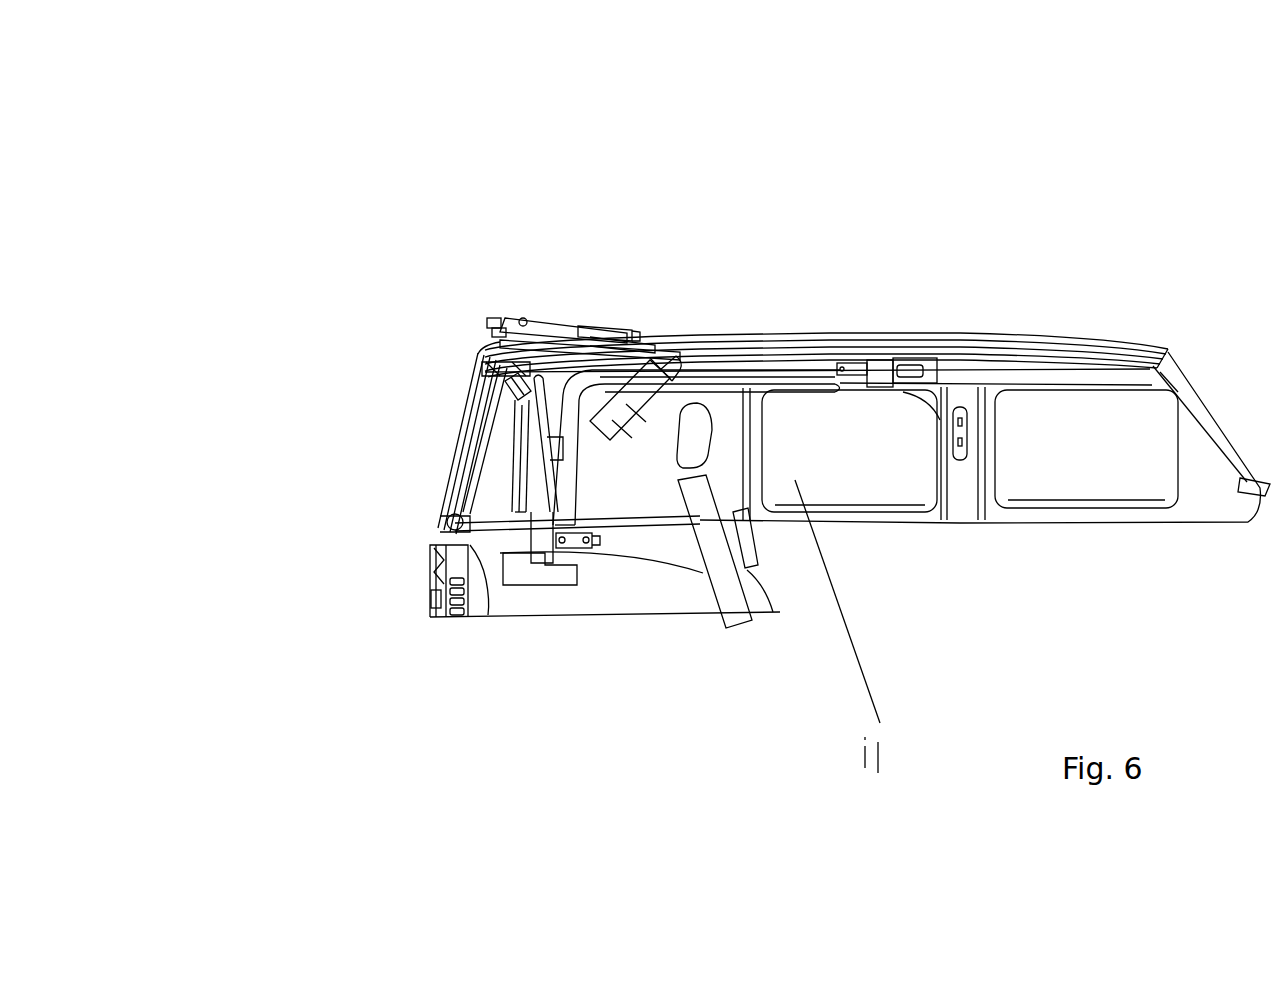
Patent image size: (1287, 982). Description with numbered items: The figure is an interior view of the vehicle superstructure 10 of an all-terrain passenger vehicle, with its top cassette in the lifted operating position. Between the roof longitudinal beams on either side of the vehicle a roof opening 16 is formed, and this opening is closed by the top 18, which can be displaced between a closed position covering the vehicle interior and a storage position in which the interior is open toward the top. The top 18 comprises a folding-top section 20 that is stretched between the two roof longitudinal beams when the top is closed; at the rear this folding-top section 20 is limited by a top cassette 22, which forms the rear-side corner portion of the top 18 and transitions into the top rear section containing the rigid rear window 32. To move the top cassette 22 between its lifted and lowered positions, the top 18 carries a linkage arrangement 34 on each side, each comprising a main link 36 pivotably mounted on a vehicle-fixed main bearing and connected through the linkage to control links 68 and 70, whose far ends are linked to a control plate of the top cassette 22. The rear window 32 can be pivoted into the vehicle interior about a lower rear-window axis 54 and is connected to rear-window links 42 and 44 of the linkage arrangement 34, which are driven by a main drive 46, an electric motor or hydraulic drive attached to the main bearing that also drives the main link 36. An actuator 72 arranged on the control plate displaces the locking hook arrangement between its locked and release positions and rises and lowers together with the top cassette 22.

The vehicle superstructure 10 is at (1097, 337).
The roof opening 16 is at (955, 337).
The top 18 is at (606, 330).
The folding-top section 20 is at (558, 338).
The top cassette 22 is at (481, 350).
The rear window 32 is at (470, 431).
The linkage arrangement 34 is at (480, 458).
The main link 36 is at (442, 528).
The rear-window link 42 is at (500, 448).
The rear-window link 44 is at (535, 545).
The main drive 46 is at (588, 553).
The lower rear-window axis 54 is at (431, 570).
The control link 68 is at (545, 422).
The control link 70 is at (520, 405).
The actuator 72 is at (488, 378).